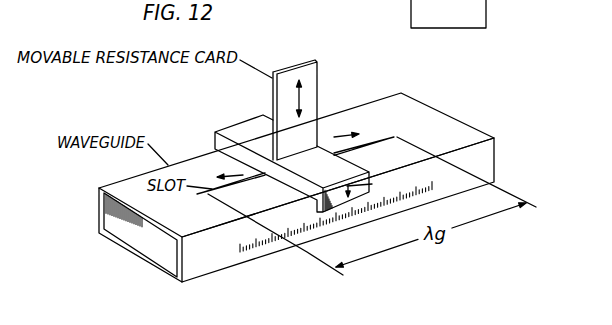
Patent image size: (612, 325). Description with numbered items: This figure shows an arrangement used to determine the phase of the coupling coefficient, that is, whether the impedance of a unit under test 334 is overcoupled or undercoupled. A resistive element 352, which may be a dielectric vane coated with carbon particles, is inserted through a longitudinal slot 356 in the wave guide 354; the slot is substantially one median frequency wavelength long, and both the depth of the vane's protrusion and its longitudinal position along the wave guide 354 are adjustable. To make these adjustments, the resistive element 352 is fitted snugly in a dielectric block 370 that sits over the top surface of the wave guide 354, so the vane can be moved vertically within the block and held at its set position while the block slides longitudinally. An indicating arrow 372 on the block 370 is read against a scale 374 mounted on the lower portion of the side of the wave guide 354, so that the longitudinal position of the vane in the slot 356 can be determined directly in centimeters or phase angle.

The unit under test 334 is at (486, 3).
The resistive element 352 is at (290, 66).
The wave guide 354 is at (127, 185).
The longitudinal slot 356 is at (377, 141).
The dielectric block 370 is at (246, 121).
The indicating arrow 372 is at (372, 184).
The scale 374 is at (262, 251).